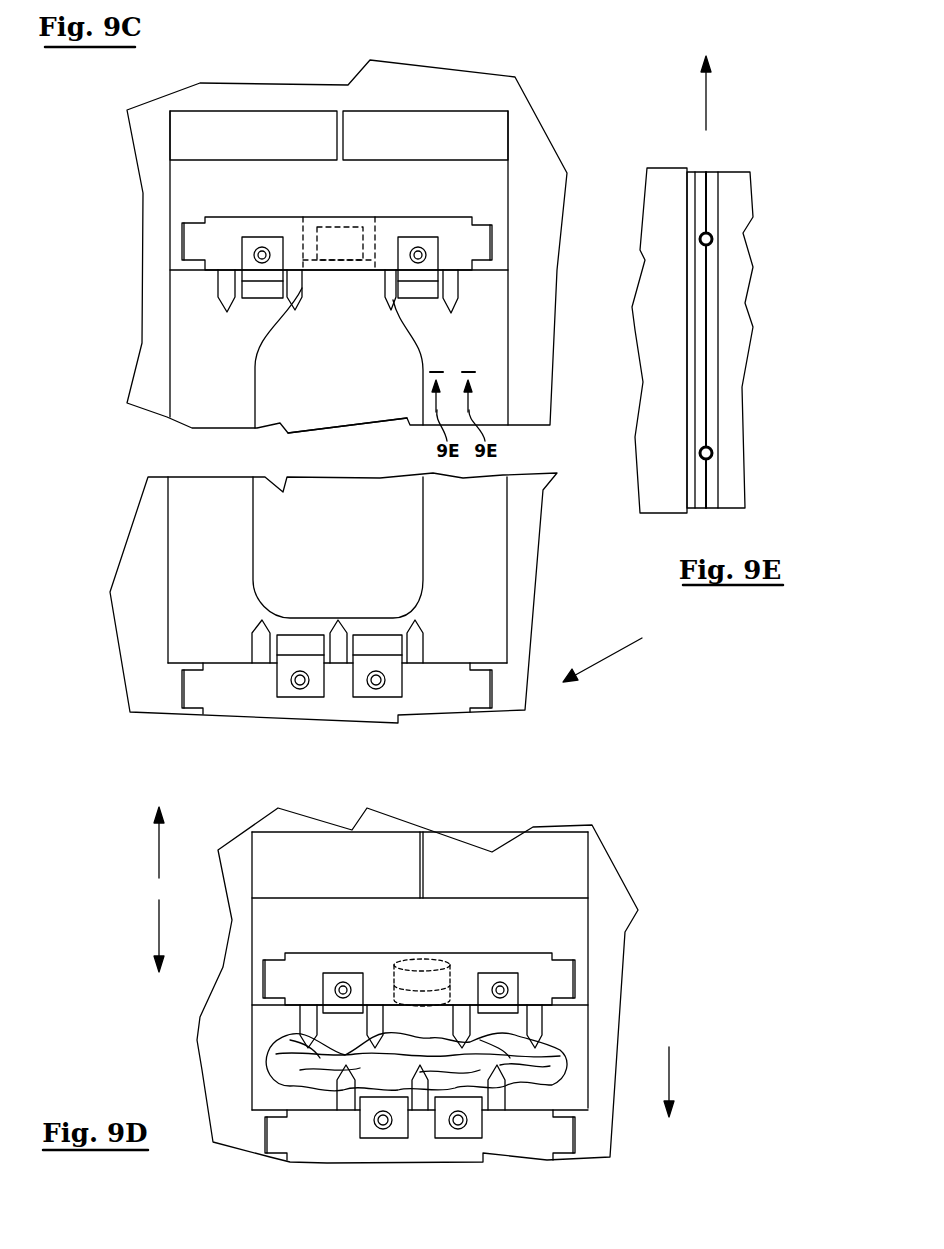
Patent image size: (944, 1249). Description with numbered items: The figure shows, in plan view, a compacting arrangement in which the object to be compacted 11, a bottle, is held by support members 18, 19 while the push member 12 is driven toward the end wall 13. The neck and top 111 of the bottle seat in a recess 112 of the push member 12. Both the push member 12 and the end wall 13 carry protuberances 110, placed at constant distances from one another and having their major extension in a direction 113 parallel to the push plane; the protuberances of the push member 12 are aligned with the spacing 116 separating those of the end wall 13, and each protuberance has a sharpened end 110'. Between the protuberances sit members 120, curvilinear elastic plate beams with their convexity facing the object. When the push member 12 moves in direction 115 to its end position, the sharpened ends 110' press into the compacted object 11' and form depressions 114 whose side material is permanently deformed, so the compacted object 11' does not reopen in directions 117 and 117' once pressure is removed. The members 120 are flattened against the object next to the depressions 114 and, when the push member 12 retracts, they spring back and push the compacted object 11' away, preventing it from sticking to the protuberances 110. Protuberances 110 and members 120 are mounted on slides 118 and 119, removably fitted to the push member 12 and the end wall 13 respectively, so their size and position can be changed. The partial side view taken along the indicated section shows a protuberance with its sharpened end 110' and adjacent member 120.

In FIG. 9C, the object to be compacted 11 is at (300, 420).
In FIG. 9D, the compacted object 11' is at (331, 1054).
In FIG. 9C, the push member 12 is at (448, 182).
In FIG. 9C, the end wall 13 is at (603, 659).
In FIG. 9C, the support member 18 is at (283, 130).
In FIG. 9C, the support member 19 is at (412, 136).
In FIG. 9C, the protuberances 110 is at (341, 526).
In FIG. 9E, the protuberances 110 is at (754, 340).
In FIG. 9D, the protuberances 110 is at (421, 1057).
In FIG. 9C, the sharpened ends 110' is at (341, 552).
In FIG. 9E, the sharpened ends 110' is at (765, 340).
In FIG. 9D, the sharpened ends 110' is at (315, 1140).
In FIG. 9C, the neck and top 111 is at (315, 240).
In FIG. 9C, the recess 112 is at (360, 222).
In FIG. 9E, the direction 113 is at (706, 100).
In FIG. 9D, the depression 114 is at (420, 1142).
In FIG. 9D, the direction 115 is at (669, 1072).
In FIG. 9C, the spacing 116 is at (403, 652).
In FIG. 9D, the direction 117 is at (124, 842).
In FIG. 9D, the direction 117' is at (120, 936).
In FIG. 9E, the slide 118 is at (733, 208).
In FIG. 9D, the slide 118 is at (530, 988).
In FIG. 9D, the slide 119 is at (503, 1070).
In FIG. 9C, the members 120 is at (262, 292).
In FIG. 9E, the members 120 is at (662, 230).
In FIG. 9D, the members 120 is at (332, 980).